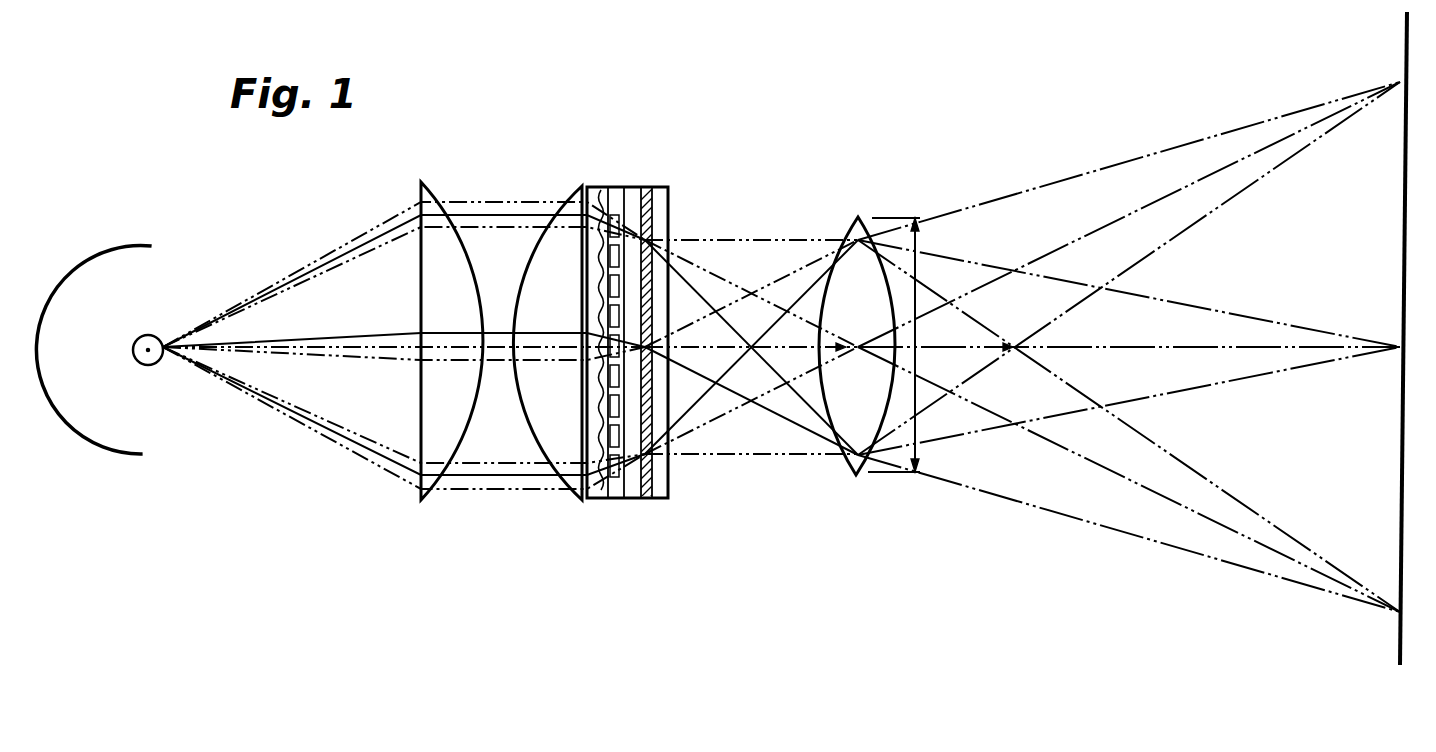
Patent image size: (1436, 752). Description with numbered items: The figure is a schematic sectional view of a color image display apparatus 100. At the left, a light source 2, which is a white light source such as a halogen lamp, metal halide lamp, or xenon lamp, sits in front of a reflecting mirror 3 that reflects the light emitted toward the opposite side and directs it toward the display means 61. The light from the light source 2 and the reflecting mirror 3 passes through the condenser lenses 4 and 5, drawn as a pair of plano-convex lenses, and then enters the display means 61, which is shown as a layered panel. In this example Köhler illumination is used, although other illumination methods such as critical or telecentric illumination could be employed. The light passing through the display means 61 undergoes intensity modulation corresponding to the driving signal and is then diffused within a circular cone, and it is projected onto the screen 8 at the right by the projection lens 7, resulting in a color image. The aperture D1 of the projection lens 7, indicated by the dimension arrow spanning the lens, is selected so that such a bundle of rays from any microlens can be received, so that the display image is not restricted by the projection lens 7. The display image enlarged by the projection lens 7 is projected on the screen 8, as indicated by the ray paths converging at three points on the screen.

The light source 2 is at (148, 365).
The reflecting mirror 3 is at (120, 451).
The condenser lens 4 is at (426, 182).
The condenser lens 5 is at (581, 190).
The display means 61 is at (630, 174).
The projection lens 7 is at (856, 476).
The aperture of the projection lens D1 is at (928, 262).
The screen 8 is at (1393, 658).
The color image display apparatus 100 is at (347, 588).